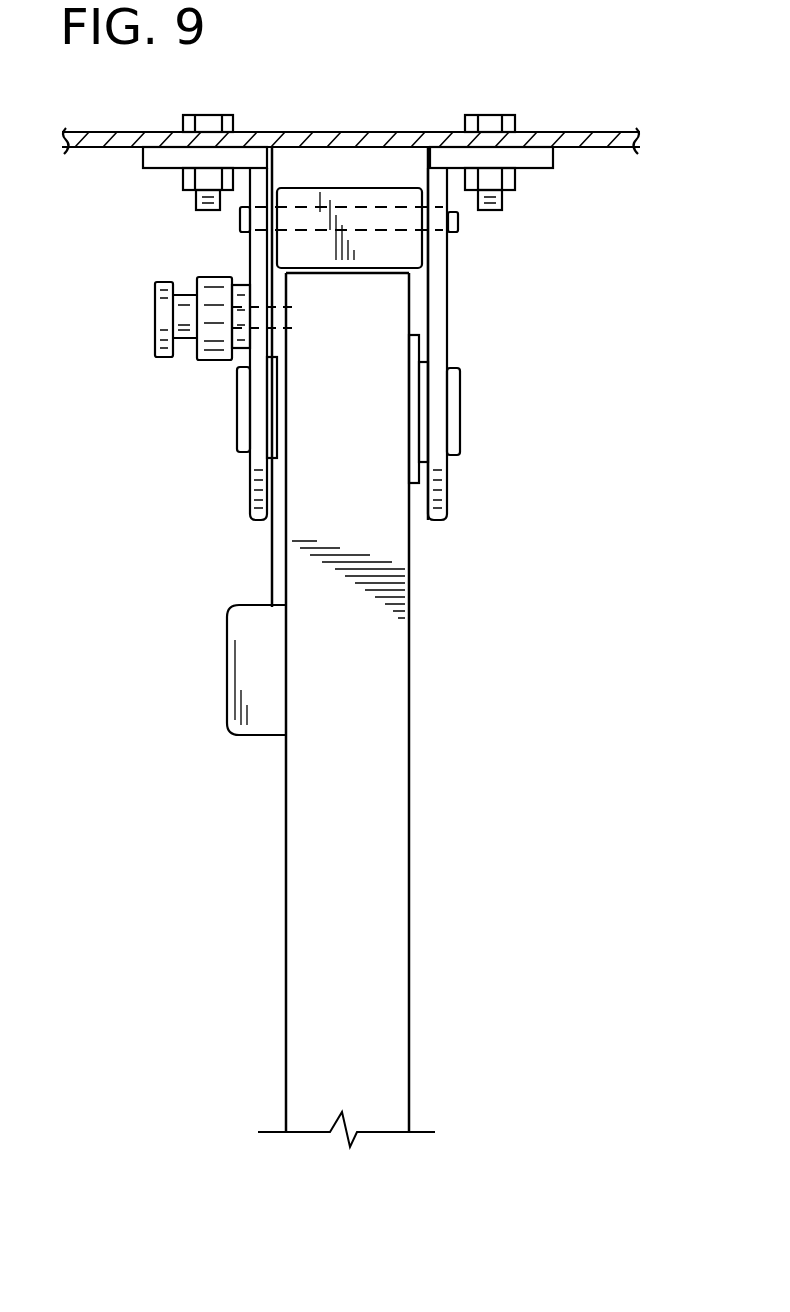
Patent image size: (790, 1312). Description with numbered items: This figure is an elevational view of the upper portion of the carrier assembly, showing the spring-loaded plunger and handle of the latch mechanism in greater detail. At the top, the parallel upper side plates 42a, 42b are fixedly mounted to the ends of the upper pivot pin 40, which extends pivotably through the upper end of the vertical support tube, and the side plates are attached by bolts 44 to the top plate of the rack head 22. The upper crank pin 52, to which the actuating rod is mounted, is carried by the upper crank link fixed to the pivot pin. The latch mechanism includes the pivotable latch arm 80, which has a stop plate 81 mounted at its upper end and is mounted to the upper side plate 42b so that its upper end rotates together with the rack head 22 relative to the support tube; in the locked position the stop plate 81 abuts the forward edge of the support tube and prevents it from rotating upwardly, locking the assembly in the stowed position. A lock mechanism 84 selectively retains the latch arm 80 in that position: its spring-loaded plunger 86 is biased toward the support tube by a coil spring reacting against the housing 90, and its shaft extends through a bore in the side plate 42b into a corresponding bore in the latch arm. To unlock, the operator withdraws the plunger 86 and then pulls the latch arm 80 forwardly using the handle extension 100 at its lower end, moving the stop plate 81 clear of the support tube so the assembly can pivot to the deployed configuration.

The rack head 22 is at (577, 142).
The bolts 44 is at (485, 122).
The upper side plate 42a is at (438, 272).
The upper side plate 42b is at (250, 258).
The upper crank pin 52 is at (458, 222).
The stop plate 81 is at (400, 241).
The upper pivot pin 40 is at (457, 413).
The latch arm 80 is at (280, 562).
The handle extension 100 is at (247, 642).
The lock mechanism 84 is at (160, 358).
The plunger 86 is at (162, 310).
The housing 90 is at (212, 343).